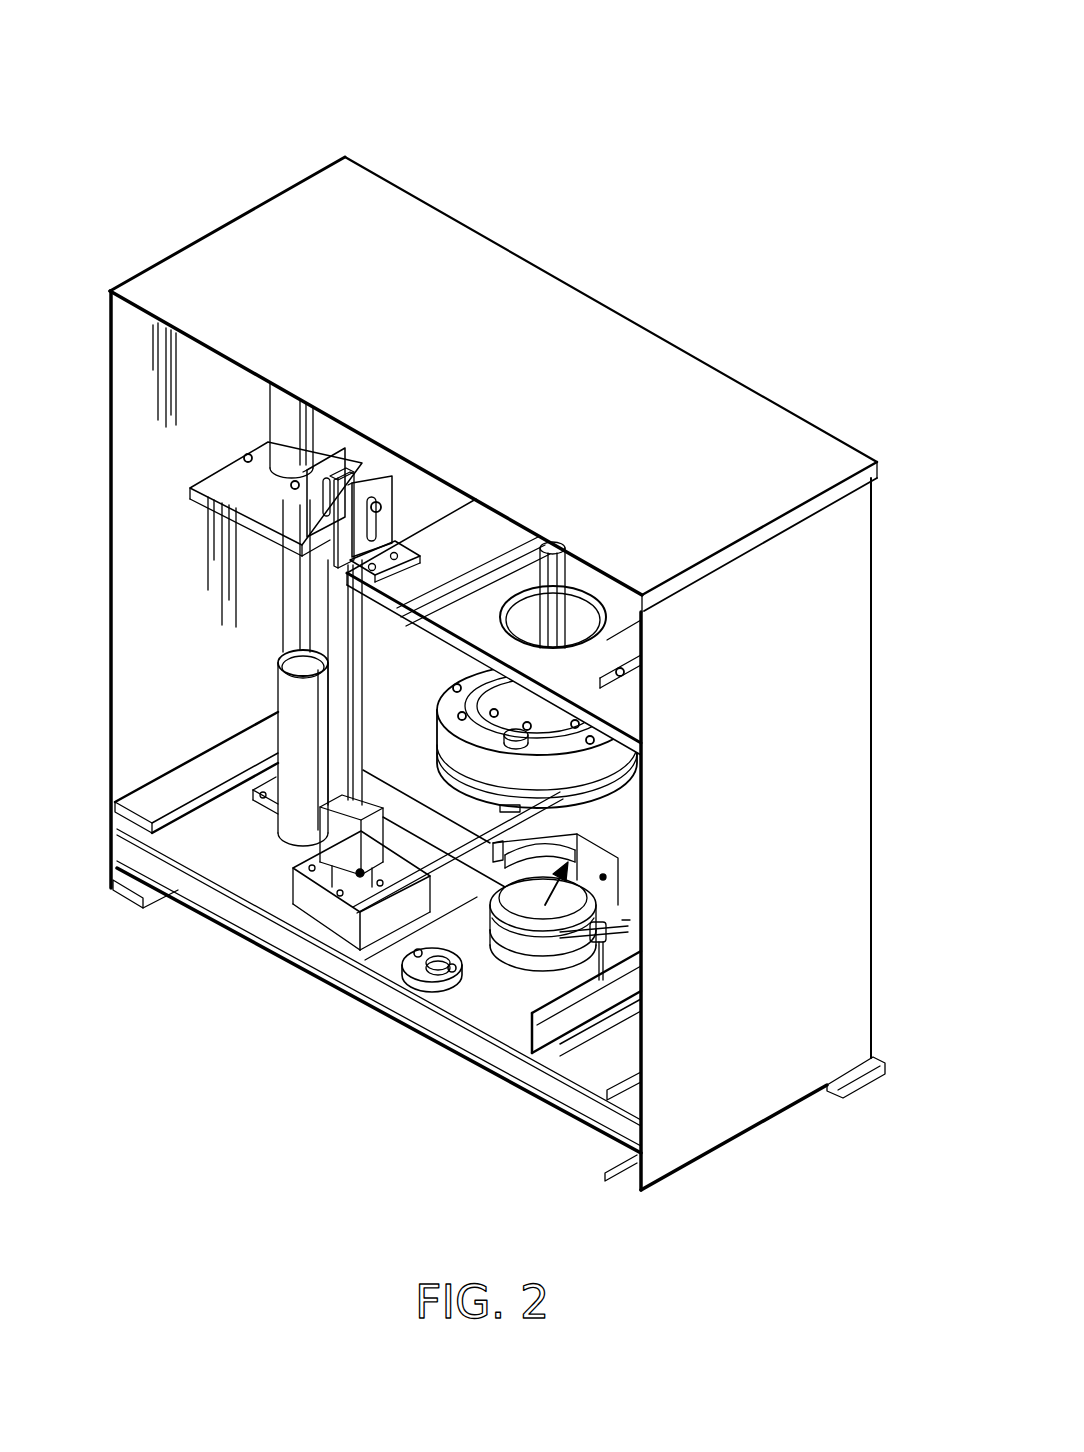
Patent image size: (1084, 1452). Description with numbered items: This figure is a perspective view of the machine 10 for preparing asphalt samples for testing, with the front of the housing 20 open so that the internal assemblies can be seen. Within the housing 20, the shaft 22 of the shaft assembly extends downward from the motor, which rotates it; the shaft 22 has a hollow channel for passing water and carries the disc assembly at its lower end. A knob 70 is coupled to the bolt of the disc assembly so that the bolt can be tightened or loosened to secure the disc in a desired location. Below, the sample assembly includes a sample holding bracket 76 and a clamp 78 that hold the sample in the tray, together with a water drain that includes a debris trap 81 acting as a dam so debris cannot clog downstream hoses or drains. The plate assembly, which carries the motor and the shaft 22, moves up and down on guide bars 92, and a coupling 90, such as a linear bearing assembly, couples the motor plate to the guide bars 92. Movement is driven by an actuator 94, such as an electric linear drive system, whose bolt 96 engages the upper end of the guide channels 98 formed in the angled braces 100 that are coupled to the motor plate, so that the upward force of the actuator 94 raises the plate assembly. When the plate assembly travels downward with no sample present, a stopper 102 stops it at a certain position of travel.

The machine 10 is at (208, 84).
The housing 20 is at (362, 164).
The shaft 22 is at (554, 553).
The knob 70 is at (517, 727).
The sample holding bracket 76 is at (520, 923).
The clamp 78 is at (572, 930).
The debris trap 81 is at (400, 985).
The coupling 90 is at (298, 430).
The guide bars 92 is at (285, 612).
The actuator 94 is at (370, 798).
The bolt 96 is at (360, 525).
The guide channels 98 is at (353, 556).
The angled braces 100 is at (348, 508).
The stopper 102 is at (300, 702).